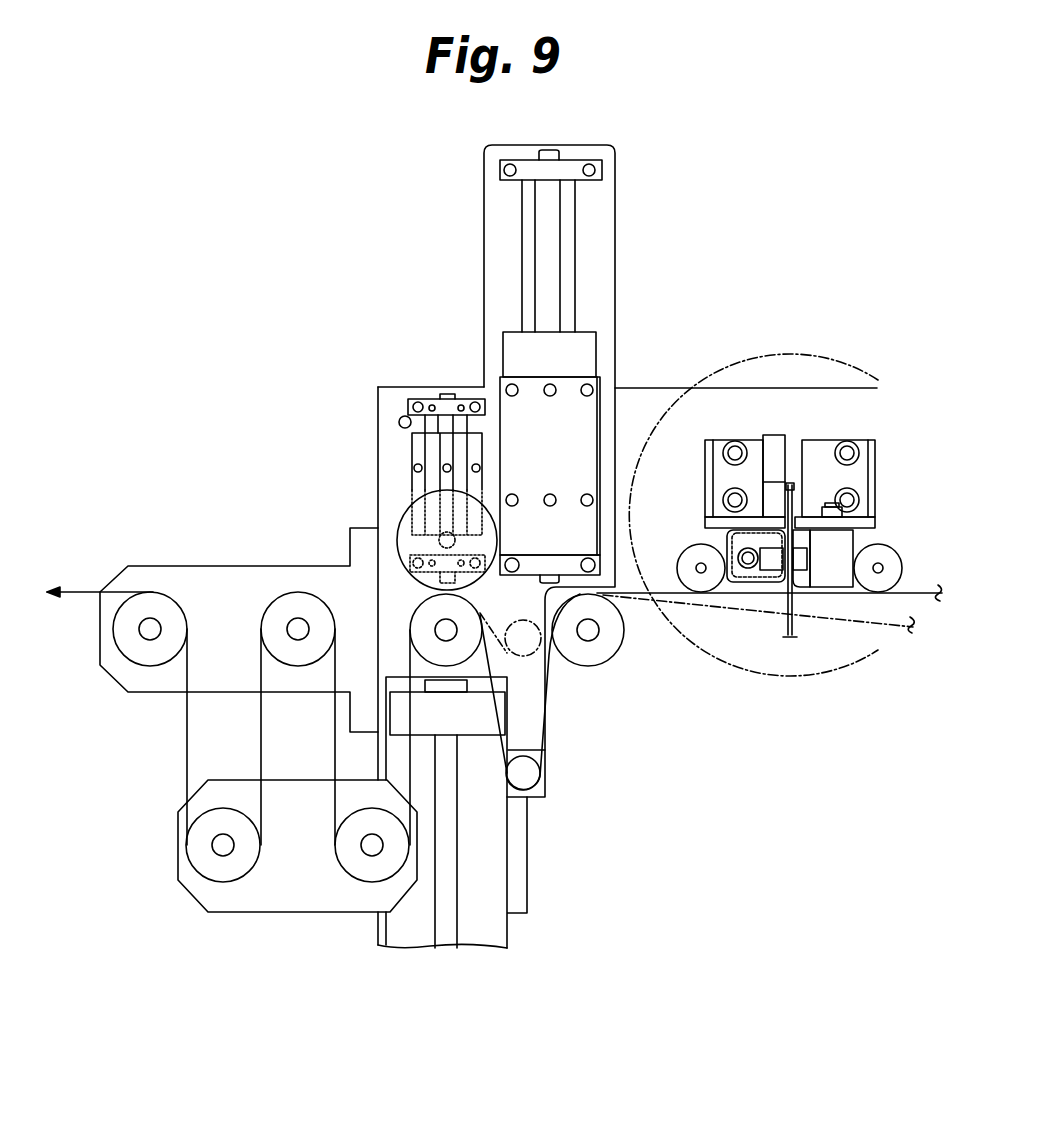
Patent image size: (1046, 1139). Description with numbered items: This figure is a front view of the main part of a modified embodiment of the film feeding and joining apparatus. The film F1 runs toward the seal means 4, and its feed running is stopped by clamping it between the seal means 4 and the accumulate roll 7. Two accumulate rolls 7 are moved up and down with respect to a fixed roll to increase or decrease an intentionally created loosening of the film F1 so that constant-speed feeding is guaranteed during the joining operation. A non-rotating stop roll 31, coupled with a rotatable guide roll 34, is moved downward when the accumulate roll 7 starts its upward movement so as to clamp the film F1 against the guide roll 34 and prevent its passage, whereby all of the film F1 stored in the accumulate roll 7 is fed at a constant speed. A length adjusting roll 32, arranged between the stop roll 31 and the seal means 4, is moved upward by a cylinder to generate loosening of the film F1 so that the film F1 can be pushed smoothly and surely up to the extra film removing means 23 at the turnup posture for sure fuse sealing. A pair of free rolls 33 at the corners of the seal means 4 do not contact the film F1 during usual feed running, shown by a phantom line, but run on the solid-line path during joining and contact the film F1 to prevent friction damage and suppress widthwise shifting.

The seal means 4 is at (813, 557).
The accumulate rolls 7 is at (227, 863).
The extra film removing means 23 is at (793, 472).
The stop roll 31 is at (398, 518).
The length adjusting roll 32 is at (537, 778).
The free rolls 33 is at (696, 558).
The guide roll 34 is at (421, 630).
The film F1 is at (750, 610).